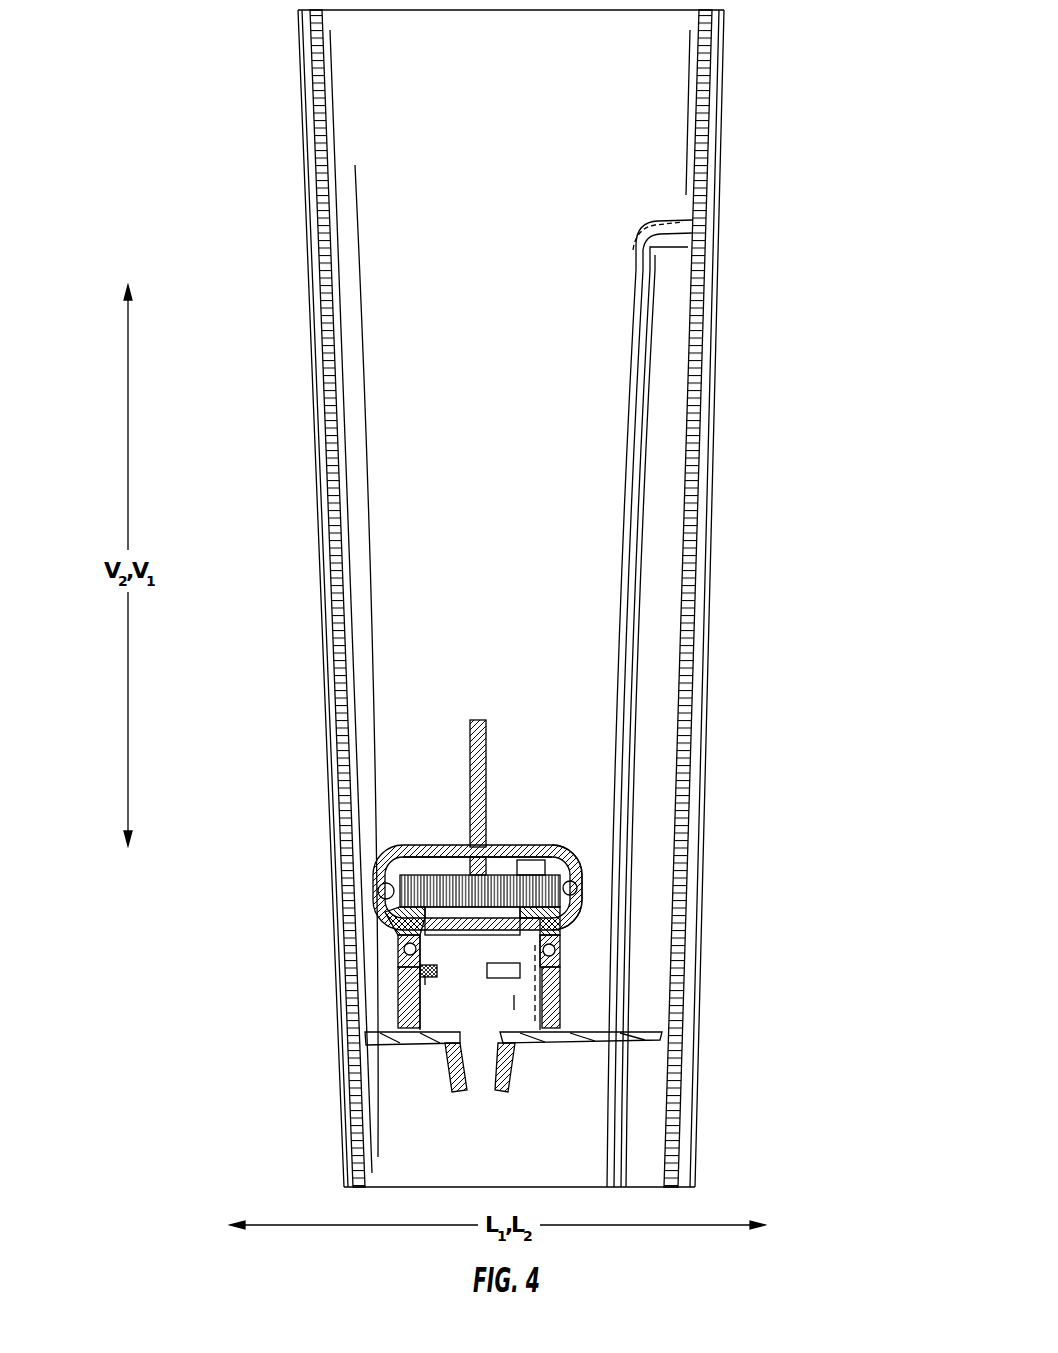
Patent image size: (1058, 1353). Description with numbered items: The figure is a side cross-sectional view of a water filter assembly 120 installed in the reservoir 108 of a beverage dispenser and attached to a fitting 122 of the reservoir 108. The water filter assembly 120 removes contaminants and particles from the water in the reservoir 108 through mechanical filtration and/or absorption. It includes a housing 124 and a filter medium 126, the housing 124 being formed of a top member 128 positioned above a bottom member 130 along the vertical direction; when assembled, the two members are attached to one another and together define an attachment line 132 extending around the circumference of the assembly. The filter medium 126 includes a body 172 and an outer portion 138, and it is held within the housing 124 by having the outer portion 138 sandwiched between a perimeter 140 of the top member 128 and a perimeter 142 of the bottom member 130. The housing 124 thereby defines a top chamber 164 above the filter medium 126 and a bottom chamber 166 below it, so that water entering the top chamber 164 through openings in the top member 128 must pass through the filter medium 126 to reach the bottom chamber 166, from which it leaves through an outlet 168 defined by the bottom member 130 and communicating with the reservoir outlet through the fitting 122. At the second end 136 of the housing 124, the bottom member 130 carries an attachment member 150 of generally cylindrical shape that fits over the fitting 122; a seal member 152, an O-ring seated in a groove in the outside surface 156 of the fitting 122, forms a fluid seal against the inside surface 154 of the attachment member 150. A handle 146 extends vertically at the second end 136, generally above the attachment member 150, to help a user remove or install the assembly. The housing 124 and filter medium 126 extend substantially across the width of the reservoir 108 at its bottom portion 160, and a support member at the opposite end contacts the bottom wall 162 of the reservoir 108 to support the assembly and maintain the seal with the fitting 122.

The reservoir 108 is at (362, 396).
The water filter assembly 120 is at (556, 656).
The fitting 122 is at (558, 998).
The housing 124 is at (596, 845).
The filter medium 126 is at (478, 920).
The top member 128 is at (513, 861).
The bottom member 130 is at (553, 926).
The attachment line 132 is at (591, 883).
The second end 136 is at (386, 943).
The outer portion 138 is at (392, 880).
The perimeter of the top member 140 is at (573, 857).
The perimeter of the bottom member 142 is at (581, 907).
The handle 146 is at (479, 739).
The attachment member 150 is at (408, 956).
The seal member 152 is at (553, 946).
The inside surface 154 is at (443, 979).
The outside surface 156 is at (554, 960).
The bottom portion 160 is at (643, 1003).
The bottom wall 162 is at (616, 1047).
The top chamber 164 is at (482, 867).
The bottom chamber 166 is at (472, 917).
The outlet 168 is at (386, 897).
The body 172 is at (501, 887).